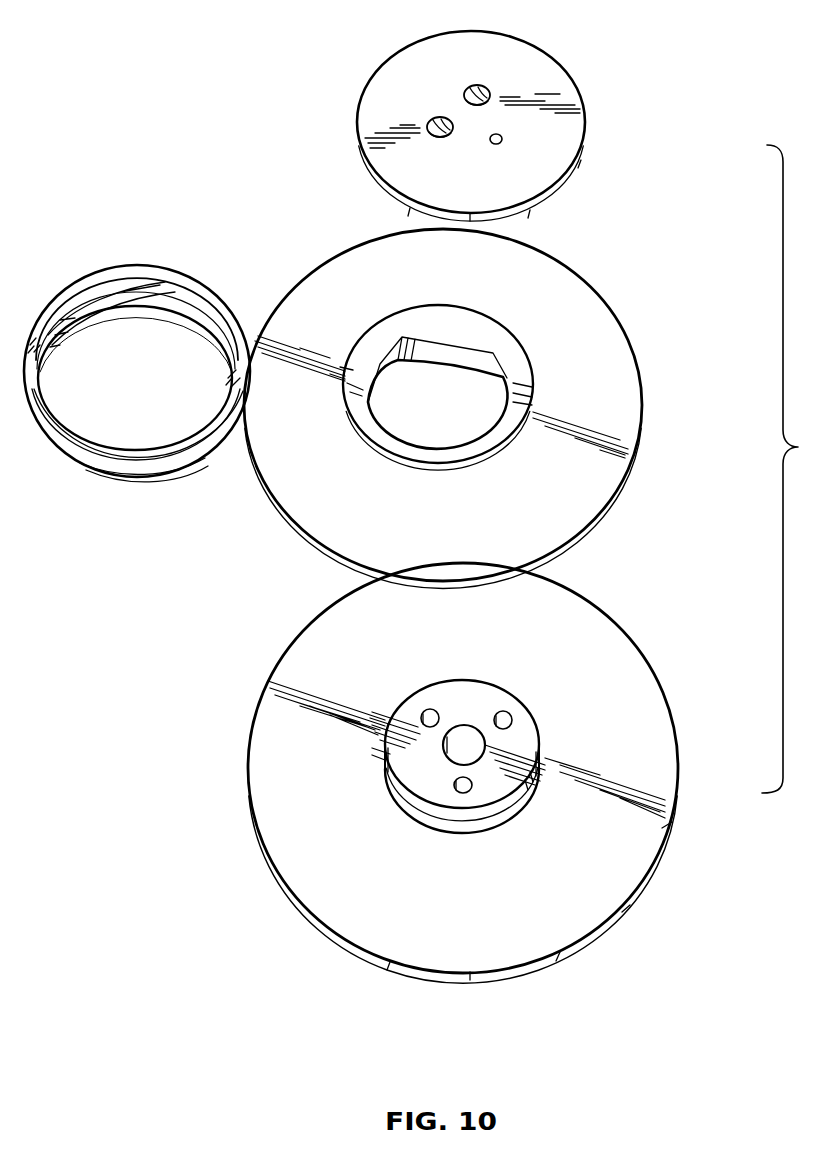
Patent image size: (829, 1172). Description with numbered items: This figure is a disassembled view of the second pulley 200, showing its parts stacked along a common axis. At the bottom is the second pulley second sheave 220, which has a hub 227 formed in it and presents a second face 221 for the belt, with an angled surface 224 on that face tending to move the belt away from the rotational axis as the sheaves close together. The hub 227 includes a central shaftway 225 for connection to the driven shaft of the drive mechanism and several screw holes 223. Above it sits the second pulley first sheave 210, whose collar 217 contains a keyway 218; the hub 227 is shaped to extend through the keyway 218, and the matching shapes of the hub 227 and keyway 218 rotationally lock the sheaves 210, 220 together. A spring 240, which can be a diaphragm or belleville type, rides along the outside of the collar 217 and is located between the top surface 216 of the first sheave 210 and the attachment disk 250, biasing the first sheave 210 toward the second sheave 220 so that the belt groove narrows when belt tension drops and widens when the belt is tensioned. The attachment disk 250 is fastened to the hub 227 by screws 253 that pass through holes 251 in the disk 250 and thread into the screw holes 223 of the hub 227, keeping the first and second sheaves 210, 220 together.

The second pulley 200 is at (178, 801).
The second pulley first sheave 210 is at (328, 263).
The top surface 216 is at (585, 347).
The collar 217 is at (517, 372).
The keyway 218 is at (452, 355).
The second pulley second sheave 220 is at (276, 682).
The second face 221 is at (358, 878).
The screw holes 223 is at (503, 713).
The angled surface 224 is at (610, 726).
The shaftway 225 is at (458, 737).
The hub 227 is at (493, 788).
The spring 240 is at (135, 274).
The attachment disk 250 is at (387, 82).
The holes 251 is at (497, 138).
The screws 253 is at (487, 88).